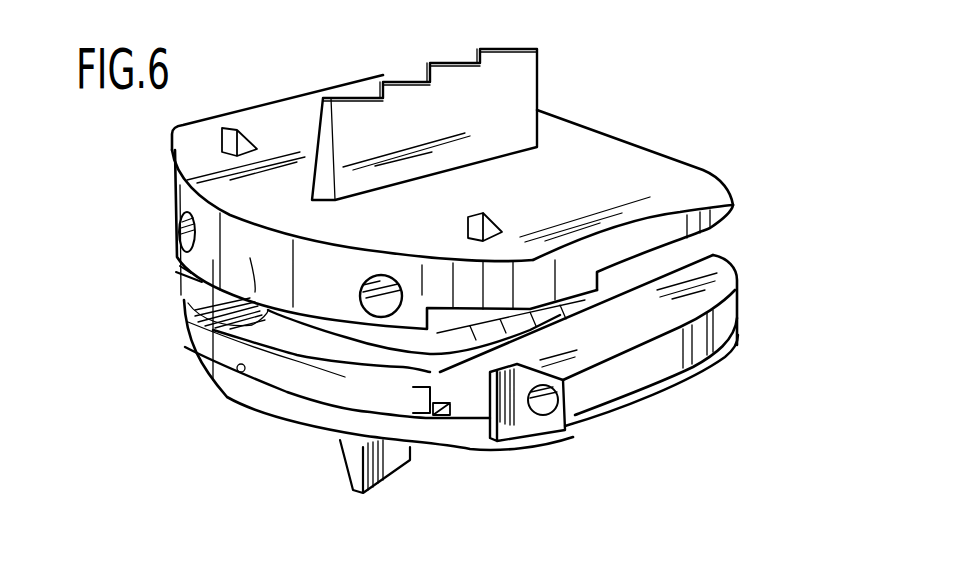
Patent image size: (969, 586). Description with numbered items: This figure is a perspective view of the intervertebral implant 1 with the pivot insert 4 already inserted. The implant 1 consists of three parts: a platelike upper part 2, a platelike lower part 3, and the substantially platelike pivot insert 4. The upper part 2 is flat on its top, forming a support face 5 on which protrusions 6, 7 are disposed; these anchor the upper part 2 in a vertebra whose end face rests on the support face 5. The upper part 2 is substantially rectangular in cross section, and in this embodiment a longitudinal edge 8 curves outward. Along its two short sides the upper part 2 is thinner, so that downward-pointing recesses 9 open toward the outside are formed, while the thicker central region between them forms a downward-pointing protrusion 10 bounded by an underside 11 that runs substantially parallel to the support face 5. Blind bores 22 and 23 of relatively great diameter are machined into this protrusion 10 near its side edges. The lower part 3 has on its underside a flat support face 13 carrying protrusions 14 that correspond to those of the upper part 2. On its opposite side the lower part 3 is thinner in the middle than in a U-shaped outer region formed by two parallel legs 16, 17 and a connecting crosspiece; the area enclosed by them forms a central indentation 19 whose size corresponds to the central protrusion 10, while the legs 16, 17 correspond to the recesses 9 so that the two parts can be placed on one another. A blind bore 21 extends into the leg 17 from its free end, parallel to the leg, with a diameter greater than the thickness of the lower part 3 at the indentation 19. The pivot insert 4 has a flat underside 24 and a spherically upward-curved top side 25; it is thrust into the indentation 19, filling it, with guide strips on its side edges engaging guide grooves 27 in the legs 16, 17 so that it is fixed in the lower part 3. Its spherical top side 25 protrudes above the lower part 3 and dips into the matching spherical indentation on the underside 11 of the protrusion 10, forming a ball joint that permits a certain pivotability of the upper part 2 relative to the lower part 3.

The intervertebral implant 1 is at (737, 181).
The upper part 2 is at (629, 121).
The lower part 3 is at (641, 407).
The pivot insert 4 is at (406, 386).
The support face 5 is at (663, 172).
The protrusion 6 is at (358, 117).
The protrusion 7 is at (230, 133).
The longitudinal edge 8 is at (188, 300).
The recess 9 is at (444, 310).
The protrusion 10 is at (490, 388).
The underside 11 is at (188, 322).
The support face 13 is at (263, 410).
The protrusion 14 is at (357, 490).
The leg 16 is at (190, 277).
The leg 17 is at (688, 302).
The central indentation 19 is at (237, 371).
The blind bore 21 is at (547, 417).
The blind bore 22 is at (177, 223).
The blind bore 23 is at (381, 276).
The underside 24 is at (335, 360).
The top side 25 is at (315, 303).
The guide groove 27 is at (448, 418).